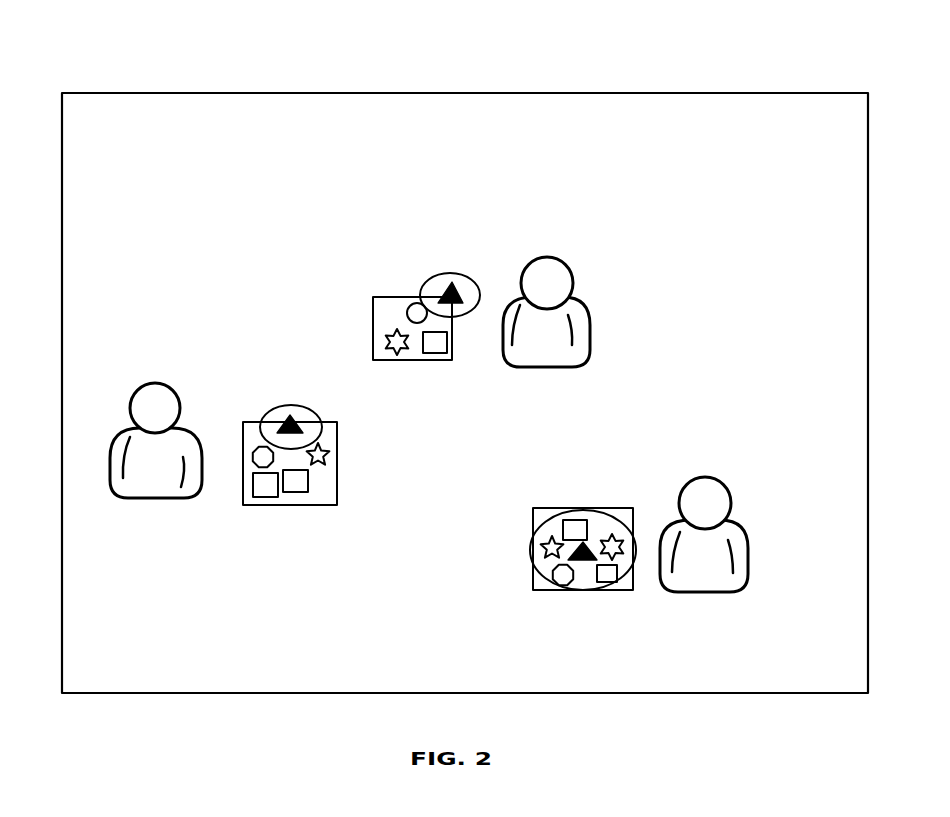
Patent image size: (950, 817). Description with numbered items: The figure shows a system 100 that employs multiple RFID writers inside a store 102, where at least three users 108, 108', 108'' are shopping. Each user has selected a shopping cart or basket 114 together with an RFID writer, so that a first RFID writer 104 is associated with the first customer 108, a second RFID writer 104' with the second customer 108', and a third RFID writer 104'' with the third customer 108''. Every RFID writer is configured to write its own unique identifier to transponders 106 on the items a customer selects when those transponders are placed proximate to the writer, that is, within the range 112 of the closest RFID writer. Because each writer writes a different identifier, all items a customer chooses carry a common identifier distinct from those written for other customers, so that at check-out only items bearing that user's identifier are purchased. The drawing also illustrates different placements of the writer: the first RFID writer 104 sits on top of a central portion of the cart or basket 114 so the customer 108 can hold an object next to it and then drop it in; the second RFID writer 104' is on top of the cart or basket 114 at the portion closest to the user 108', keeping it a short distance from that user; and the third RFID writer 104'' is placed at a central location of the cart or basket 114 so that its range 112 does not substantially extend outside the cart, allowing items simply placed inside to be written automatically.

The system 100 is at (151, 47).
The store 102 is at (125, 93).
The first RFID writer 104 is at (260, 405).
The second RFID writer 104' is at (421, 280).
The third RFID writer 104'' is at (540, 560).
The transponders 106 is at (323, 442).
The first user 108 is at (151, 453).
The second user 108' is at (541, 330).
The third user 108'' is at (697, 551).
The range 112 is at (267, 420).
The shopping cart or basket 114 is at (253, 505).